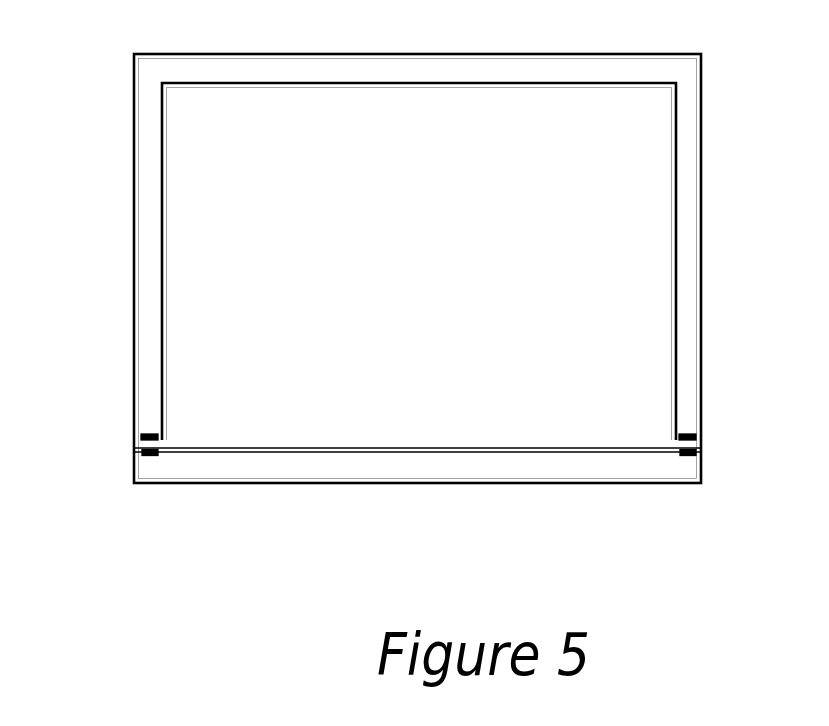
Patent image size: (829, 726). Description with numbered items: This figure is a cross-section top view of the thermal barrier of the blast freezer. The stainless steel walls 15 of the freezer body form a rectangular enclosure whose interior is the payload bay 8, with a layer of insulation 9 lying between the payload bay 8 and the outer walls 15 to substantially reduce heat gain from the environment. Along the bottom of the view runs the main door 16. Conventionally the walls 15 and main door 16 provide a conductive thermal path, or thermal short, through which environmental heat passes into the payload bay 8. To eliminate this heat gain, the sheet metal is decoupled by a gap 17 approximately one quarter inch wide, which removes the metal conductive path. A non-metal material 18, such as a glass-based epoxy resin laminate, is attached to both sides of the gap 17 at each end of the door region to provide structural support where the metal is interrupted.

The payload bay 8 is at (468, 253).
The insulation 9 is at (160, 97).
The stainless steel walls 15 is at (134, 269).
The main door 16 is at (446, 462).
The gap 17 is at (148, 455).
The non-metal material 18 is at (141, 437).